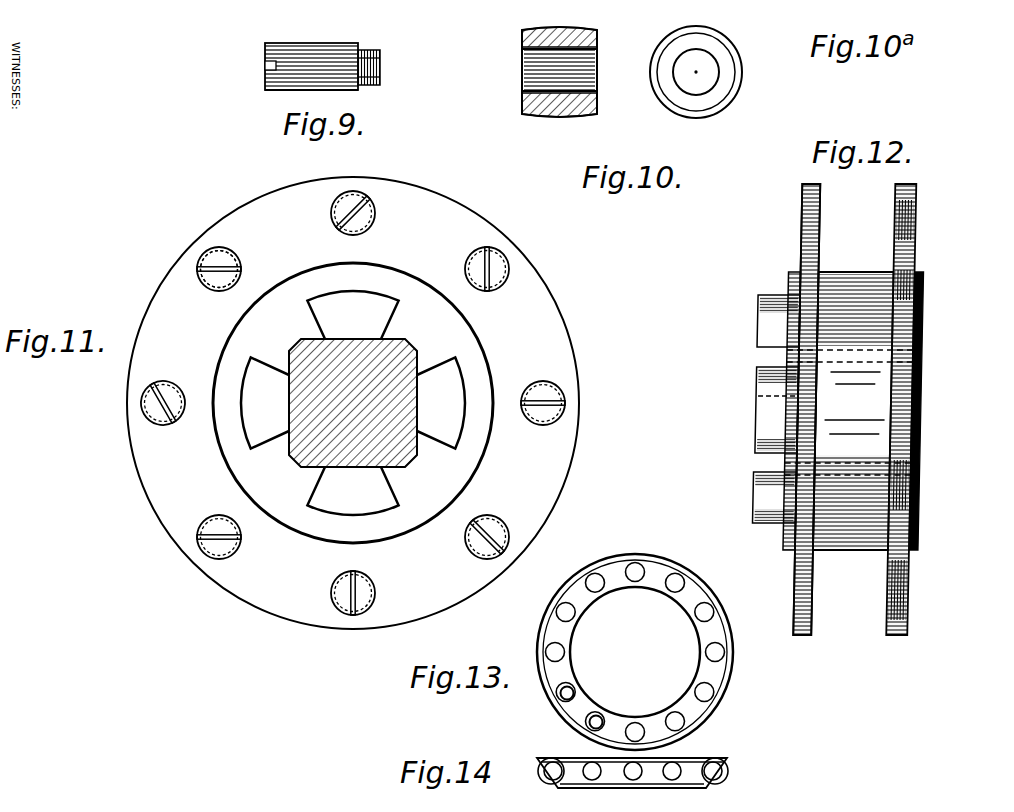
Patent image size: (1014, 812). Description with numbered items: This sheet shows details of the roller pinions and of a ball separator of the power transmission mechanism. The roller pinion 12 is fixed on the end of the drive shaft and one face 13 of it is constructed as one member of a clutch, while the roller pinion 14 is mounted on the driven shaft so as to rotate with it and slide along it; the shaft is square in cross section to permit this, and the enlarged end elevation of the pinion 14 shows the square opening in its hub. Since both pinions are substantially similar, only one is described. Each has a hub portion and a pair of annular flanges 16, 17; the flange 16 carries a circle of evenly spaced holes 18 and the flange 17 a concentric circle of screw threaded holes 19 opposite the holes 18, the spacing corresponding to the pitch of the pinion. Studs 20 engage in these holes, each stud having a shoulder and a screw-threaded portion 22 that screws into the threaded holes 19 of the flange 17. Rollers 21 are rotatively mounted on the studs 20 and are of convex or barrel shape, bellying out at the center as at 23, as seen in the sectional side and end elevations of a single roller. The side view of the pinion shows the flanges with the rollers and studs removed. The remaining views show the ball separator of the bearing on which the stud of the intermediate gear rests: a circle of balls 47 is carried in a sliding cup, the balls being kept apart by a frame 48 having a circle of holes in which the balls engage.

In FIG. 11, the roller pinion 12 is at (353, 403).
In FIG. 12, the roller pinion 12 is at (853, 411).
In FIG. 11, the clutch face 13 is at (257, 395).
In FIG. 12, the clutch face 13 is at (760, 321).
In FIG. 11, the roller pinion 14 is at (302, 466).
In FIG. 11, the annular flange 16 is at (556, 312).
In FIG. 12, the annular flange 16 is at (805, 263).
In FIG. 12, the annular flange 17 is at (907, 250).
In FIG. 11, the holes 18 is at (198, 268).
In FIG. 12, the holes 18 is at (821, 237).
In FIG. 11, the screw threaded holes 19 is at (216, 248).
In FIG. 12, the screw threaded holes 19 is at (917, 215).
In FIG. 9, the stud 20 is at (307, 56).
In FIG. 11, the stud 20 is at (370, 229).
In FIG. 10, the roller 21 is at (533, 80).
In FIG. 10a, the roller 21 is at (725, 71).
In FIG. 9, the screw-threaded portion 22 is at (380, 60).
In FIG. 10, the bellied center 23 is at (557, 117).
In FIG. 10a, the bellied center 23 is at (718, 36).
In FIG. 13, the balls 47 is at (598, 712).
In FIG. 14, the balls 47 is at (557, 759).
In FIG. 13, the frame 48 is at (728, 638).
In FIG. 14, the frame 48 is at (708, 759).